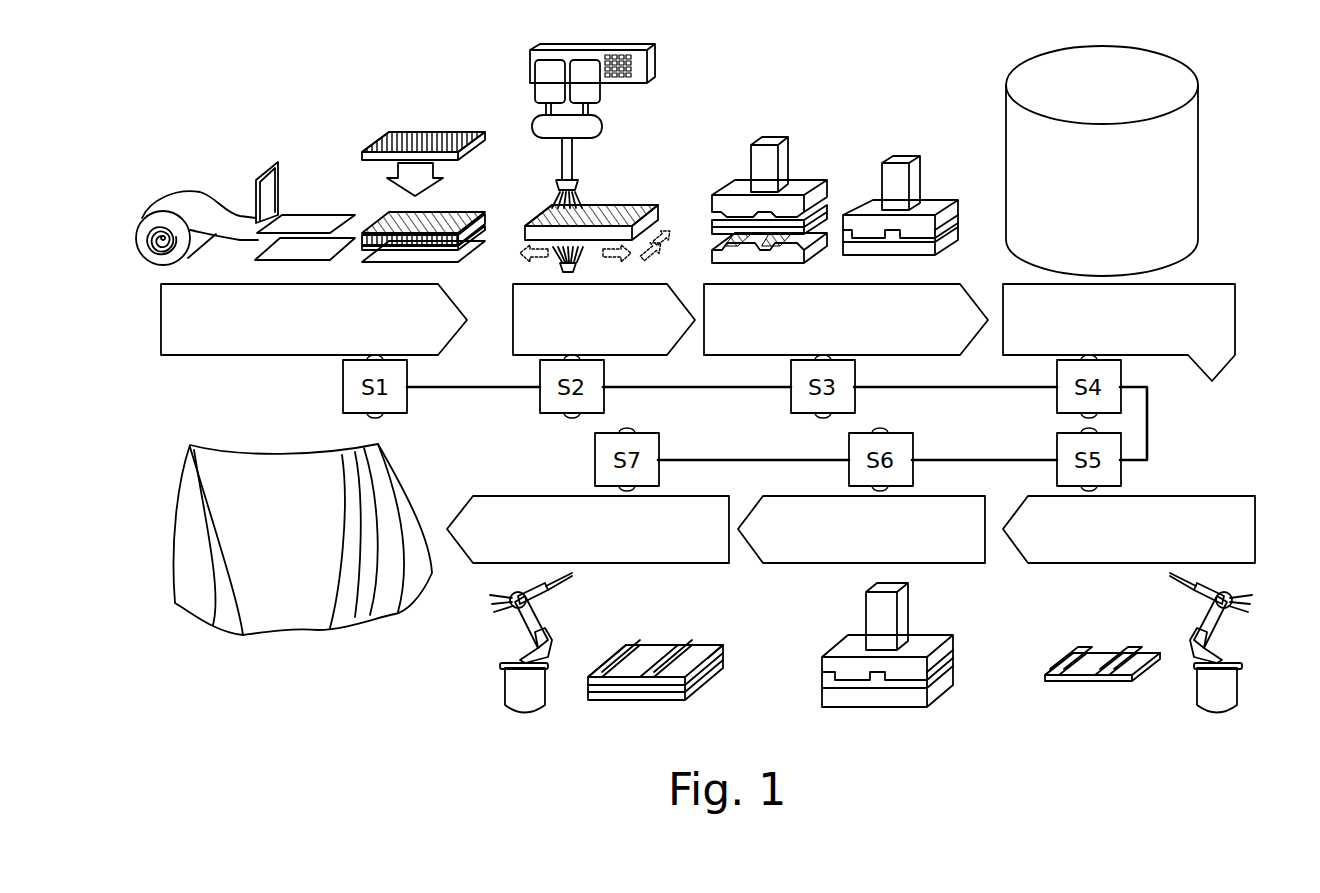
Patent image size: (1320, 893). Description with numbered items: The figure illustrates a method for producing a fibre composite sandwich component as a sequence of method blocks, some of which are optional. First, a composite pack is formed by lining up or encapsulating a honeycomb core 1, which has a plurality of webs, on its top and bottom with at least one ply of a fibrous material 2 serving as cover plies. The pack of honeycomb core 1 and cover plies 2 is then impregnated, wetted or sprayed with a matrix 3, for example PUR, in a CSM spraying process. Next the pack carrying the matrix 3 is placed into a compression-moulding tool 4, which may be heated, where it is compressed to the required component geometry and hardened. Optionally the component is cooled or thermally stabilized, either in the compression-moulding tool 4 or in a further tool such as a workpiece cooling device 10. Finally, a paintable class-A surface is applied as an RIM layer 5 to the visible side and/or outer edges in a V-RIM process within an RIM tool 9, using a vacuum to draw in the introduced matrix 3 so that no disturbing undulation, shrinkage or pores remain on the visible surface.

The honeycomb core 1 is at (396, 232).
The fibrous material 2 is at (181, 196).
The matrix 3 is at (578, 194).
The compression-moulding tool 4 is at (802, 190).
The RIM layer 5 is at (680, 678).
The RIM tool 9 is at (926, 648).
The workpiece cooling device 10 is at (1167, 187).